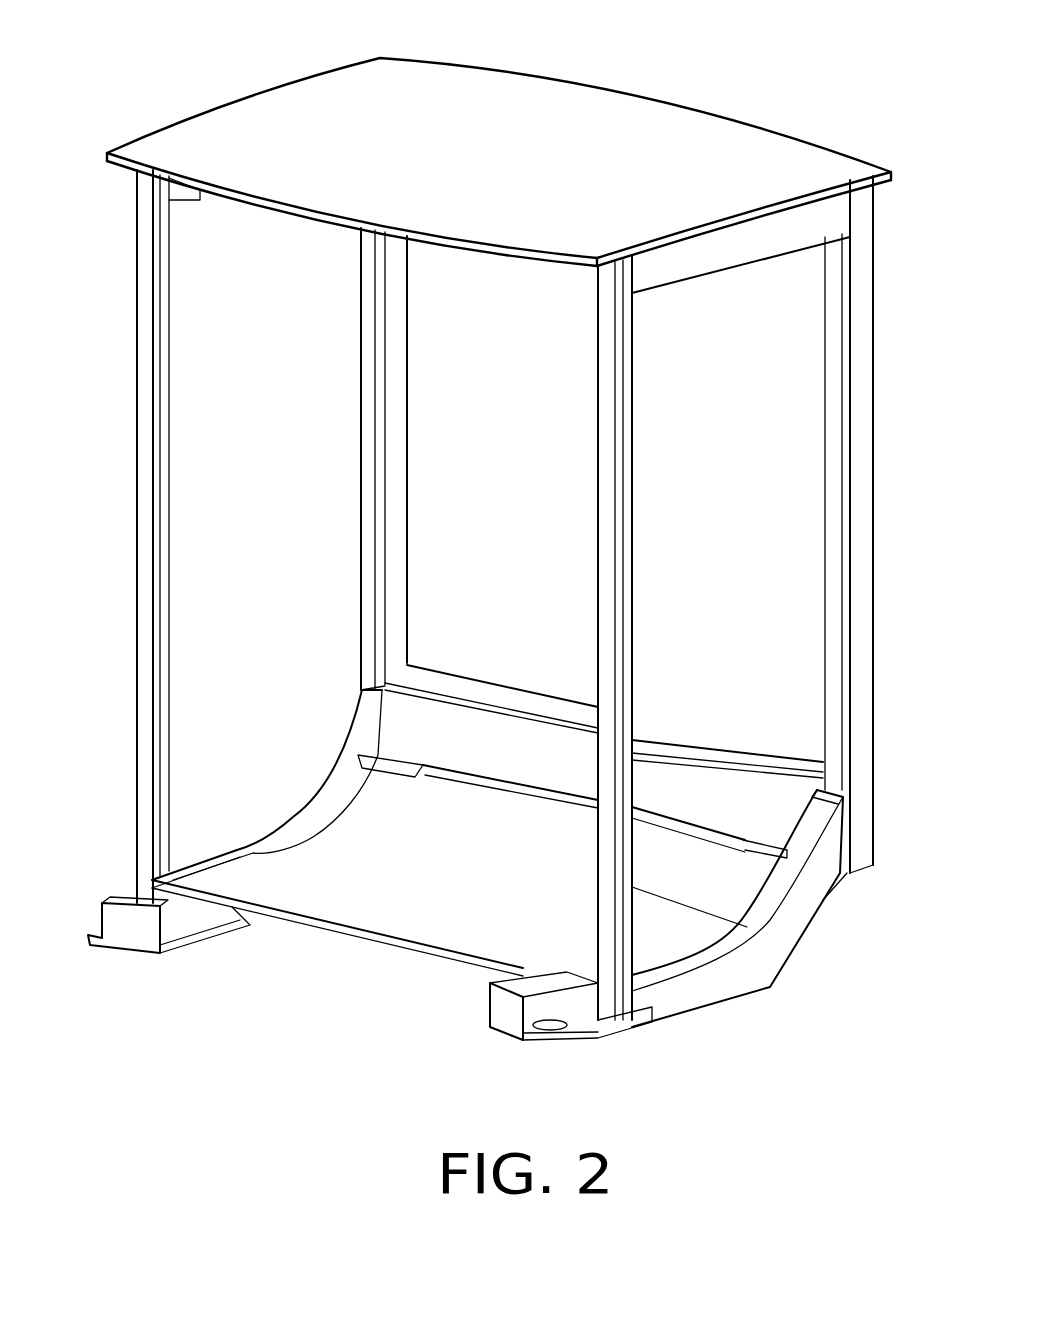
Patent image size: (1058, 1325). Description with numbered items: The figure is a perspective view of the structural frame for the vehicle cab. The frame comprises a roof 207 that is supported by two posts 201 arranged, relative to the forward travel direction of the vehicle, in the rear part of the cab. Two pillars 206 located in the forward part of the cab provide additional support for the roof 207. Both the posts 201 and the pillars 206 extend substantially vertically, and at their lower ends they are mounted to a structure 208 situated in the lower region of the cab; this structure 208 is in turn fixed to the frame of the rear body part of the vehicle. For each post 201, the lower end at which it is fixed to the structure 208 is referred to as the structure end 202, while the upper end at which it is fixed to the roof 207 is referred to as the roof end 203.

The post 201 is at (365, 443).
The structure end 202 is at (858, 855).
The roof end 203 is at (860, 273).
The pillar 206 is at (142, 528).
The roof 207 is at (573, 138).
The structure 208 is at (795, 920).